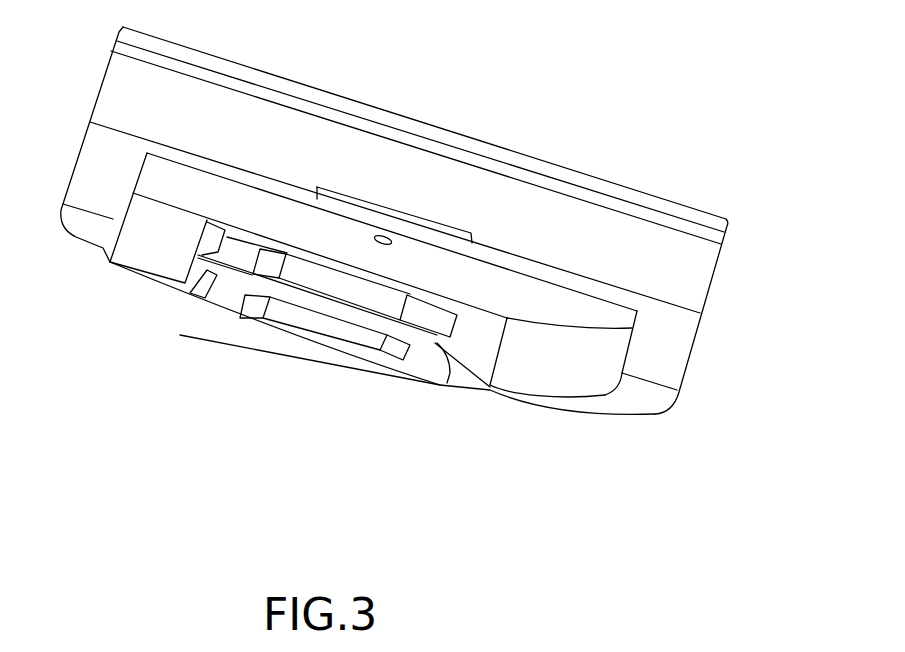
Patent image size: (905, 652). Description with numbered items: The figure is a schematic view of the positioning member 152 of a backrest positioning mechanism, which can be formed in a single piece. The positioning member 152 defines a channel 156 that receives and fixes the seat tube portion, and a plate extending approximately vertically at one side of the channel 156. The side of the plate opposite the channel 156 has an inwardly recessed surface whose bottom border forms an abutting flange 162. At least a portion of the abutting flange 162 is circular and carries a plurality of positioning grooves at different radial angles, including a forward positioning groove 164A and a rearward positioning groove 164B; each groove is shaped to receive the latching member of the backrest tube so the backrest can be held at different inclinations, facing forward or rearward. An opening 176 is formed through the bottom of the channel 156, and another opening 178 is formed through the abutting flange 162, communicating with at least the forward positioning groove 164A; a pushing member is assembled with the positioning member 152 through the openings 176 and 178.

The positioning member 152 is at (743, 102).
The channel 156 is at (112, 93).
The abutting flange 162 is at (337, 330).
The forward positioning groove 164A is at (227, 300).
The rearward positioning groove 164B is at (470, 380).
The opening 176 is at (410, 218).
The opening 178 is at (447, 355).